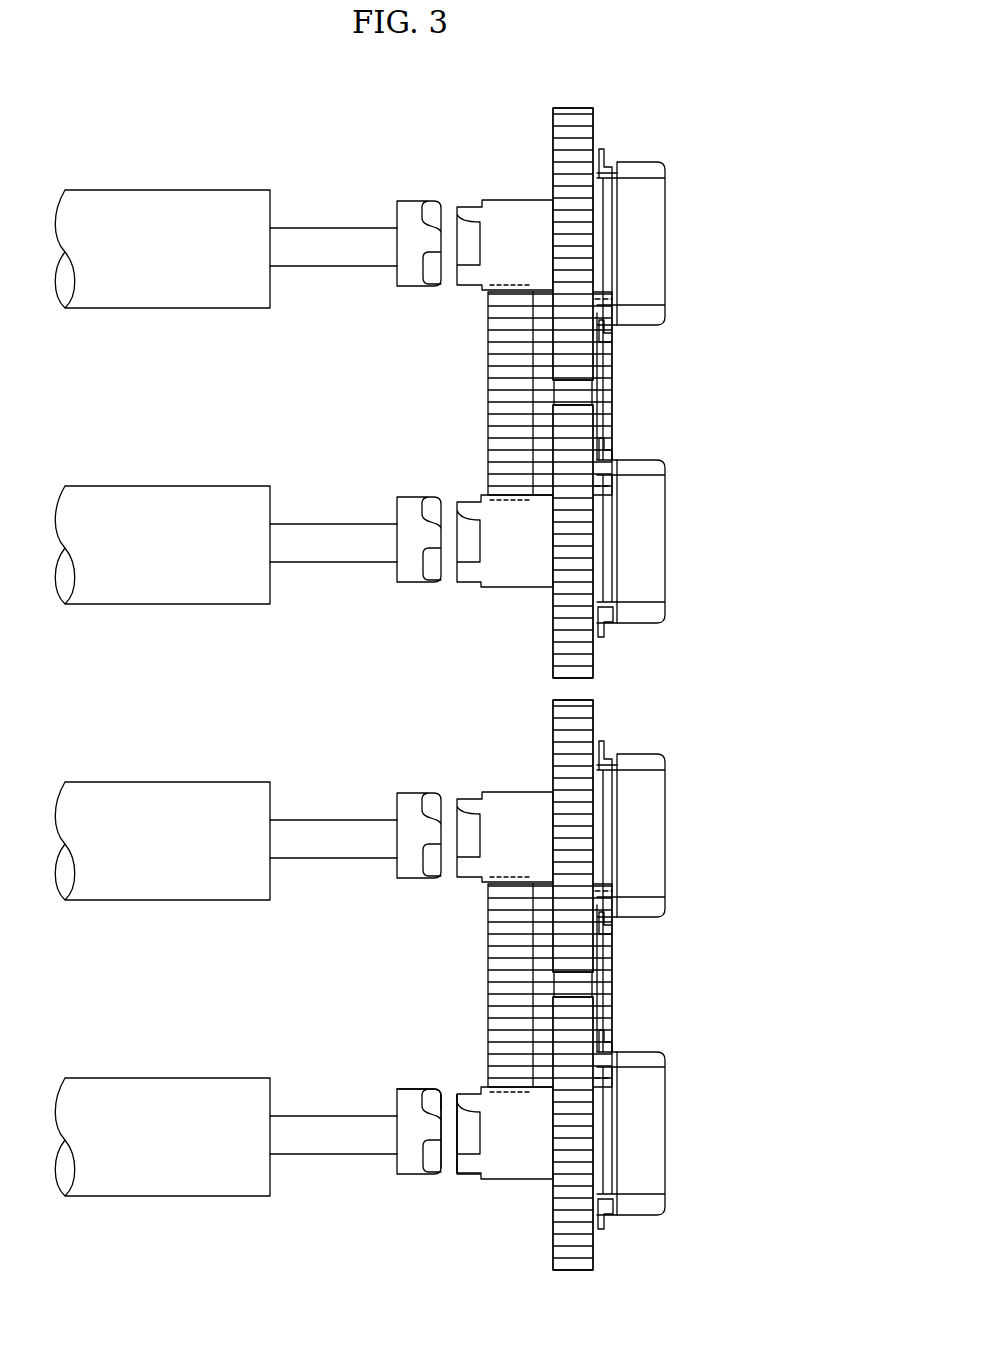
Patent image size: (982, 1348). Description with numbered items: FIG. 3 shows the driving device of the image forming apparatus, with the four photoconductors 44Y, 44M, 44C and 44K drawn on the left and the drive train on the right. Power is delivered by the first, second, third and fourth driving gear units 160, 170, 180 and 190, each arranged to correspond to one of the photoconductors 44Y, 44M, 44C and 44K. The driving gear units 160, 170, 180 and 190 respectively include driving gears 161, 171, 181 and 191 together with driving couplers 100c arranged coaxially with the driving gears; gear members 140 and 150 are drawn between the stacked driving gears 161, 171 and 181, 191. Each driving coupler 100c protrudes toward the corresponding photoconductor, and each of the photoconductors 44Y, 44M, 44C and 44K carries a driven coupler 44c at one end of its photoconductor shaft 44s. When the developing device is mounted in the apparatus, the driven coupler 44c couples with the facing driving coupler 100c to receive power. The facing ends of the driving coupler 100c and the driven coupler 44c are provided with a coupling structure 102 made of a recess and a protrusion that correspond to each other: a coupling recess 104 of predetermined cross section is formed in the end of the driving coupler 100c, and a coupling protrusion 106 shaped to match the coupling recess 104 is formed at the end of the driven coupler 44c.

The photoconductor 44K is at (162, 311).
The photoconductor 44C is at (162, 606).
The photoconductor 44M is at (162, 903).
The photoconductor 44Y is at (162, 1199).
The photoconductor shaft 44s is at (327, 270).
The driven coupler 44c is at (411, 288).
The driving coupler 100c is at (512, 205).
The coupling structure 102 is at (441, 1076).
The coupling recess 104 is at (467, 1160).
The coupling protrusion 106 is at (397, 1092).
The fourth driving gear unit 190 is at (682, 157).
The driving gear 191 is at (575, 350).
The third driving gear unit 180 is at (688, 497).
The driving gear 181 is at (575, 432).
The first intermediate gear 150 is at (630, 391).
The second driving gear unit 170 is at (671, 882).
The driving gear 171 is at (630, 836).
The first driving gear unit 160 is at (671, 1129).
The driving gear 161 is at (630, 1133).
The second intermediate gear 140 is at (610, 985).